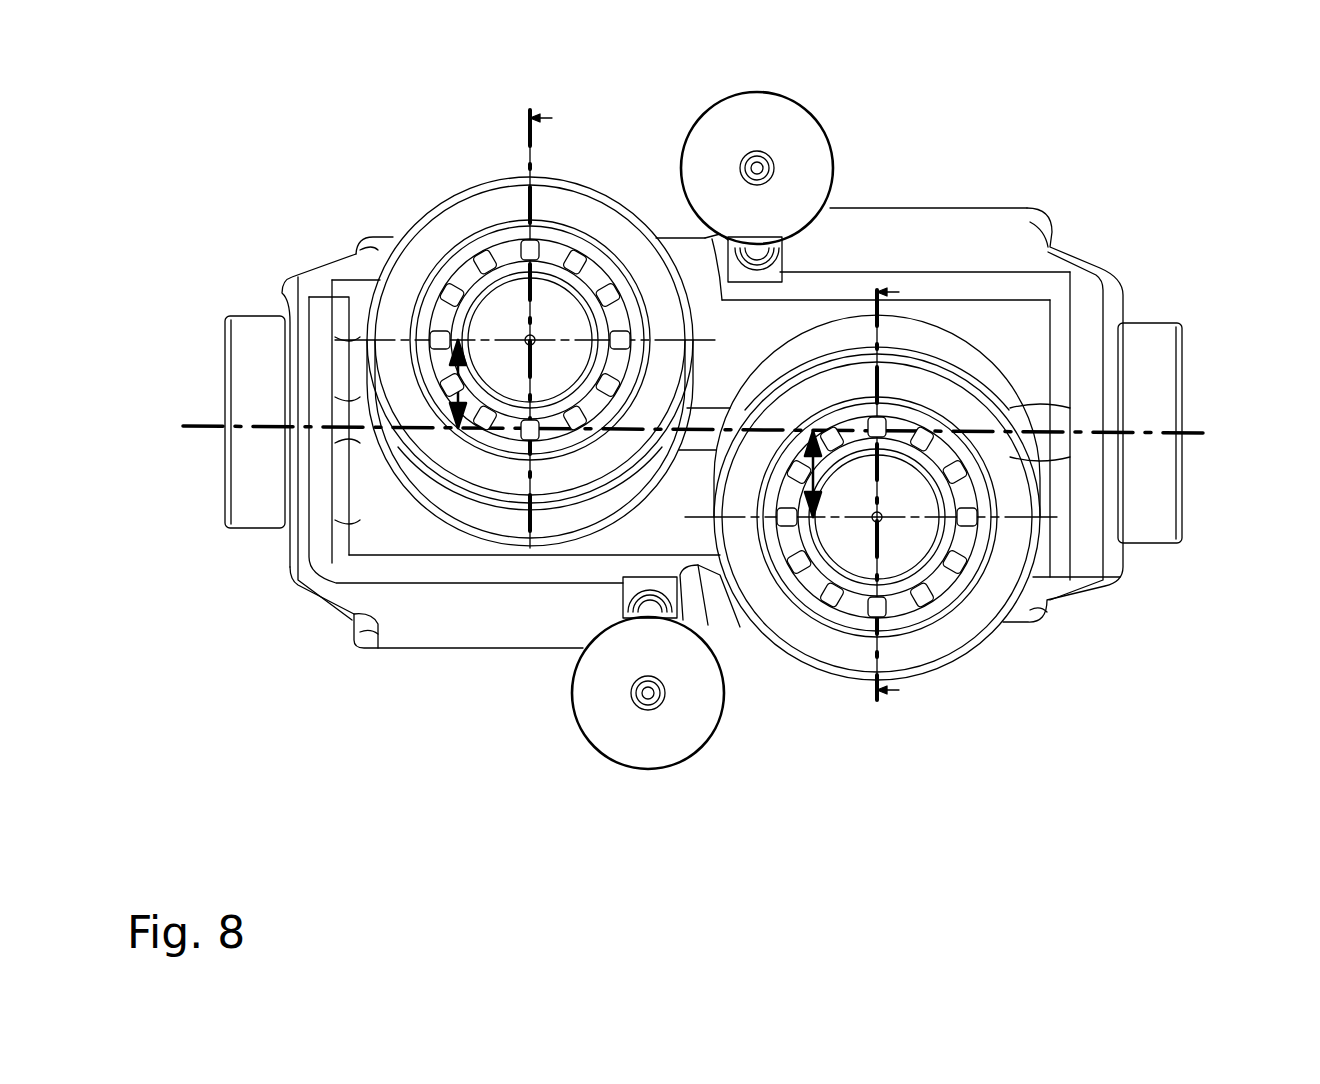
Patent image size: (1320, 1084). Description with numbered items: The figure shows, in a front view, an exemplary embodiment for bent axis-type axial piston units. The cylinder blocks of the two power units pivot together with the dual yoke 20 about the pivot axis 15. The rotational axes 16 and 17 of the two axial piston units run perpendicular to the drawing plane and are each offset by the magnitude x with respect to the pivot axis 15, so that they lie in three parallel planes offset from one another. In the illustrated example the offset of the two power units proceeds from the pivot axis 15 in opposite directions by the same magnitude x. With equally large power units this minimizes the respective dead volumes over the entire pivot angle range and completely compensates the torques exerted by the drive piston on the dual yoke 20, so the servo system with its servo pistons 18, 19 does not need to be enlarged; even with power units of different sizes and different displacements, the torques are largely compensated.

The pivot axis 15 is at (1113, 428).
The rotational axis 16 is at (963, 527).
The rotational axis 17 is at (477, 335).
The servo piston 18 is at (795, 153).
The servo piston 19 is at (692, 688).
The dual yoke 20 is at (1000, 247).